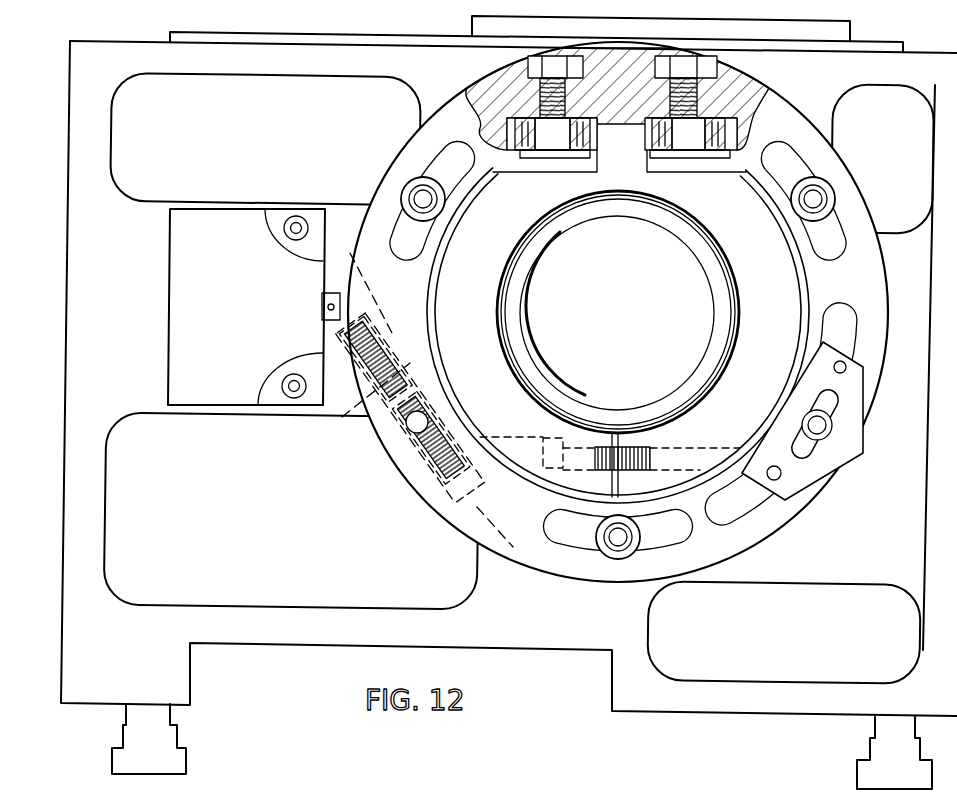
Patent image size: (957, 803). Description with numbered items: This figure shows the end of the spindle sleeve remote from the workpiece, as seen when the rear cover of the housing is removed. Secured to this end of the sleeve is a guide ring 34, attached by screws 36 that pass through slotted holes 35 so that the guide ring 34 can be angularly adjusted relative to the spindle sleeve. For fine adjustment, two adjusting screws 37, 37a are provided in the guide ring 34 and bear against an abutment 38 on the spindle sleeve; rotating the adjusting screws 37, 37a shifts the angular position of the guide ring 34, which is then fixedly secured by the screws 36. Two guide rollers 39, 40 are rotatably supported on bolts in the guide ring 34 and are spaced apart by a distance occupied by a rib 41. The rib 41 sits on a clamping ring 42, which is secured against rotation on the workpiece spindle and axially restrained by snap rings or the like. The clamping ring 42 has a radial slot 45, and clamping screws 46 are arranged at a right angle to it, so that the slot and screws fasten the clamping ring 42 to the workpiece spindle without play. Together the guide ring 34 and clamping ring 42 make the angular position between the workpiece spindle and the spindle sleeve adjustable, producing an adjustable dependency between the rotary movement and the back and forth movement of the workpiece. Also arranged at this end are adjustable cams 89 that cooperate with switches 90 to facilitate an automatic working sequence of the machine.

The guide ring 34 is at (765, 107).
The slotted holes 35 is at (452, 160).
The screws 36 is at (420, 197).
The adjusting screw 37 is at (387, 413).
The adjusting screw 37a is at (453, 485).
The abutment 38 is at (415, 428).
The guide roller 39 is at (521, 146).
The guide roller 40 is at (727, 146).
The rib 41 is at (622, 150).
The clamping ring 42 is at (645, 312).
The radial slot 45 is at (618, 447).
The clamping screws 46 is at (553, 455).
The cams 89 is at (858, 450).
The switches 90 is at (205, 318).